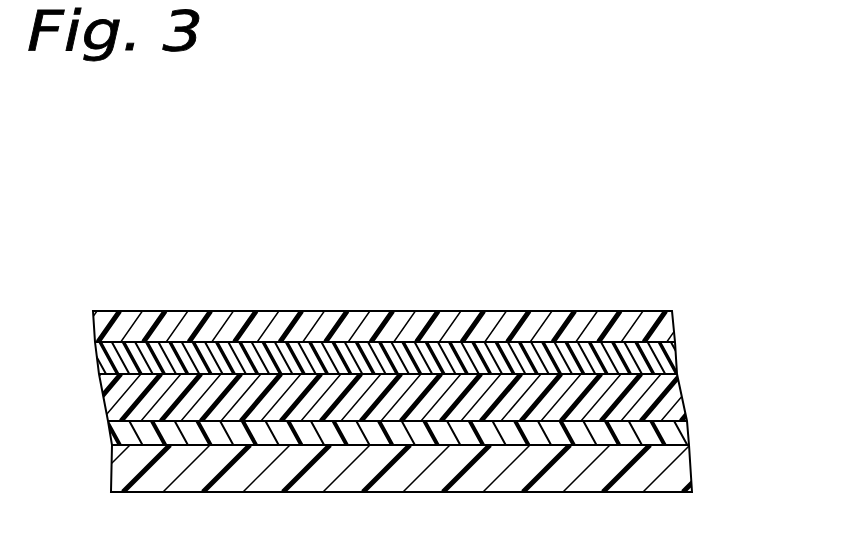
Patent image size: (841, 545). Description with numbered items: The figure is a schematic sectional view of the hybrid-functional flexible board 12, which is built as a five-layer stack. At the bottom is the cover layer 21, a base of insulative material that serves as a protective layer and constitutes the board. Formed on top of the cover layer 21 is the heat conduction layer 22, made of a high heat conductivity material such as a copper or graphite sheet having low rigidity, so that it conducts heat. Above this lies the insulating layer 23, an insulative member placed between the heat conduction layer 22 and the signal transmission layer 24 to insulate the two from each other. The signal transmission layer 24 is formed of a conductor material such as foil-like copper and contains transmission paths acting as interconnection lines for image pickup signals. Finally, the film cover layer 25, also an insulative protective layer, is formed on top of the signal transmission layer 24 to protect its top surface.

The hybrid-functional flexible board 12 is at (622, 205).
The cover layer 21 is at (682, 467).
The heat conduction layer 22 is at (675, 428).
The insulating layer 23 is at (667, 403).
The signal transmission layer 24 is at (670, 350).
The film cover layer 25 is at (663, 322).